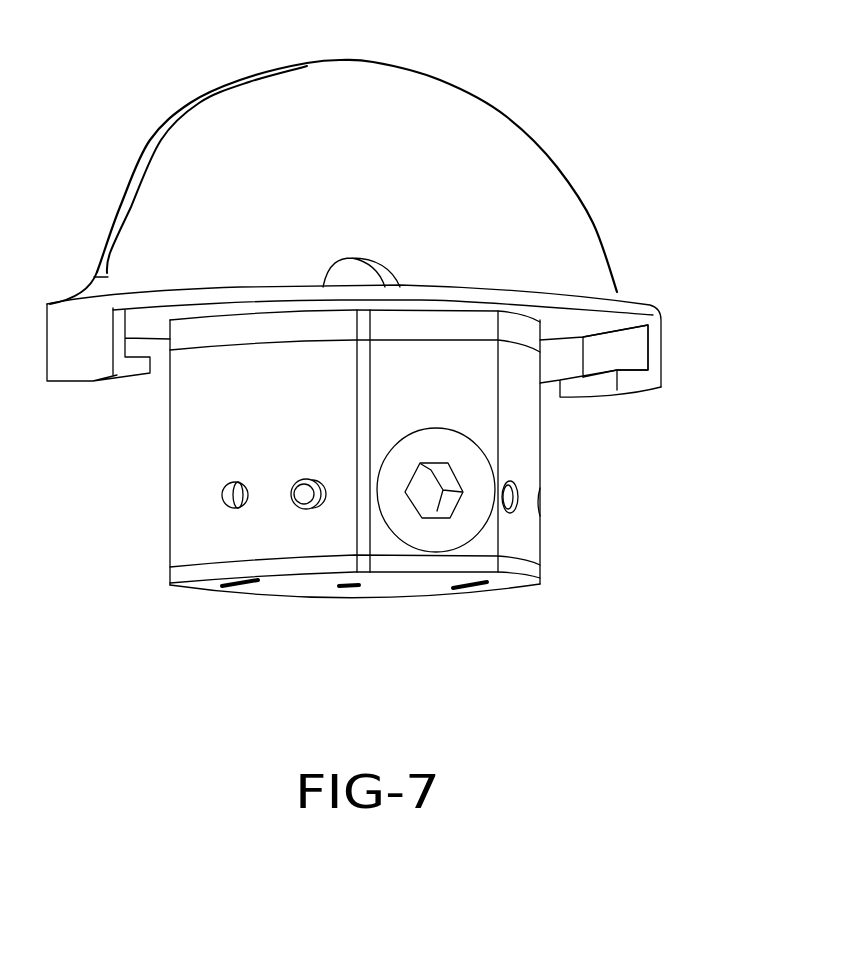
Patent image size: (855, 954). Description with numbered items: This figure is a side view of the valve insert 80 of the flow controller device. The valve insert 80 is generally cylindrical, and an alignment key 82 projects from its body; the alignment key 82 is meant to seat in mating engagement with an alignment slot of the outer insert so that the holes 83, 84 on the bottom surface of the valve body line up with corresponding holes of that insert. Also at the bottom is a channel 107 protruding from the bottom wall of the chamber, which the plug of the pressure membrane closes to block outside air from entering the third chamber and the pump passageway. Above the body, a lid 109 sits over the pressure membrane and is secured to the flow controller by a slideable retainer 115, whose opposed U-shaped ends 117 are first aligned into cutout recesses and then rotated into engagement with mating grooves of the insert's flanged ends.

The slideable retainer 115 is at (463, 137).
The opposed U shaped ends 117 is at (635, 347).
The lid 109 is at (455, 323).
The valve insert 80 is at (517, 445).
The alignment key 82 is at (438, 418).
The hole 83 is at (240, 584).
The channel 107 is at (347, 587).
The hole 84 is at (473, 588).